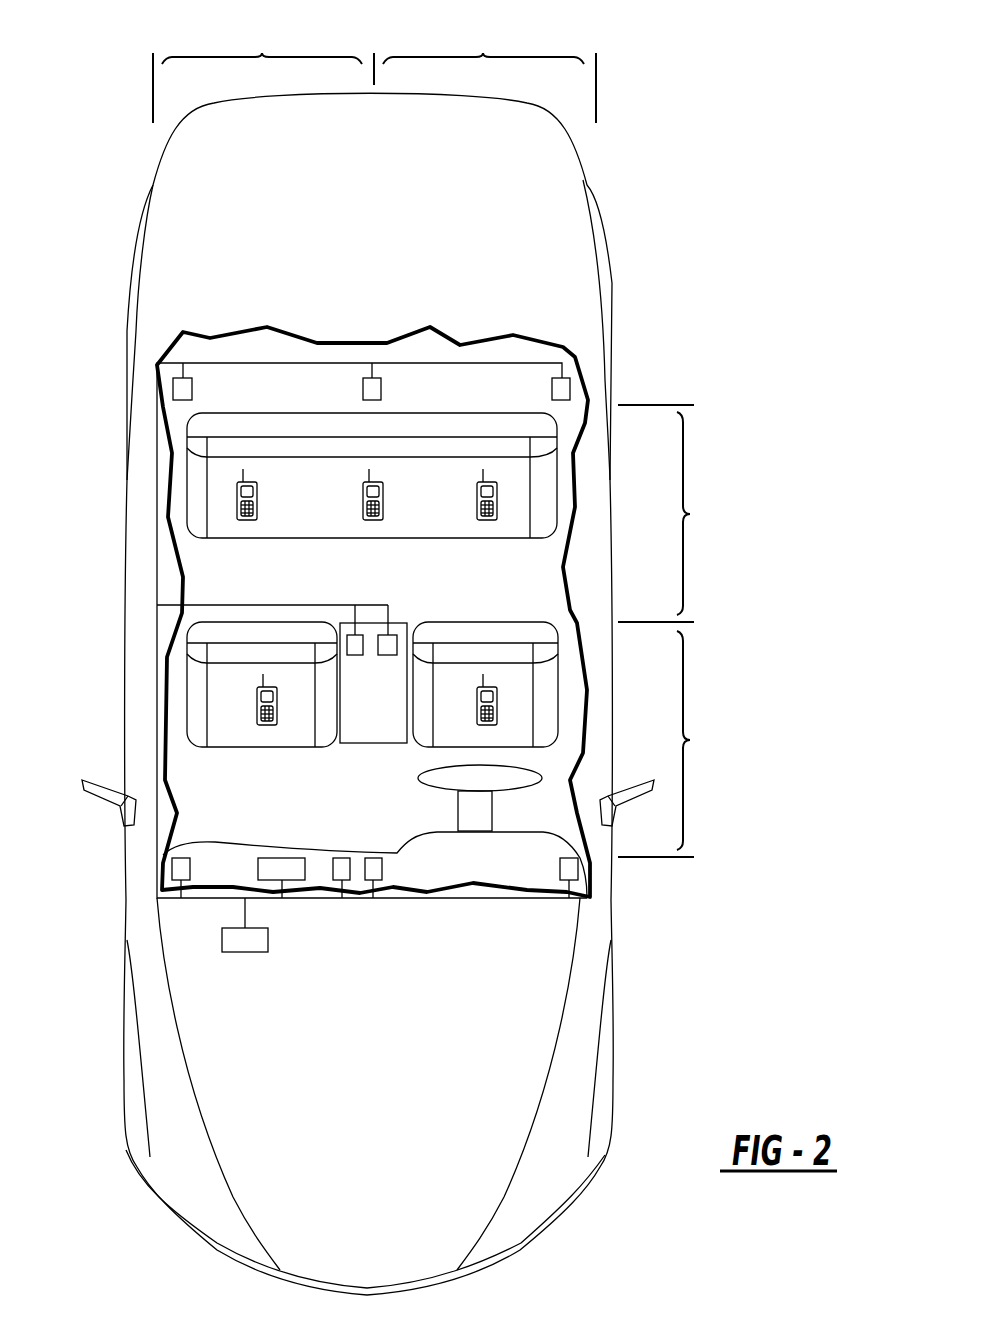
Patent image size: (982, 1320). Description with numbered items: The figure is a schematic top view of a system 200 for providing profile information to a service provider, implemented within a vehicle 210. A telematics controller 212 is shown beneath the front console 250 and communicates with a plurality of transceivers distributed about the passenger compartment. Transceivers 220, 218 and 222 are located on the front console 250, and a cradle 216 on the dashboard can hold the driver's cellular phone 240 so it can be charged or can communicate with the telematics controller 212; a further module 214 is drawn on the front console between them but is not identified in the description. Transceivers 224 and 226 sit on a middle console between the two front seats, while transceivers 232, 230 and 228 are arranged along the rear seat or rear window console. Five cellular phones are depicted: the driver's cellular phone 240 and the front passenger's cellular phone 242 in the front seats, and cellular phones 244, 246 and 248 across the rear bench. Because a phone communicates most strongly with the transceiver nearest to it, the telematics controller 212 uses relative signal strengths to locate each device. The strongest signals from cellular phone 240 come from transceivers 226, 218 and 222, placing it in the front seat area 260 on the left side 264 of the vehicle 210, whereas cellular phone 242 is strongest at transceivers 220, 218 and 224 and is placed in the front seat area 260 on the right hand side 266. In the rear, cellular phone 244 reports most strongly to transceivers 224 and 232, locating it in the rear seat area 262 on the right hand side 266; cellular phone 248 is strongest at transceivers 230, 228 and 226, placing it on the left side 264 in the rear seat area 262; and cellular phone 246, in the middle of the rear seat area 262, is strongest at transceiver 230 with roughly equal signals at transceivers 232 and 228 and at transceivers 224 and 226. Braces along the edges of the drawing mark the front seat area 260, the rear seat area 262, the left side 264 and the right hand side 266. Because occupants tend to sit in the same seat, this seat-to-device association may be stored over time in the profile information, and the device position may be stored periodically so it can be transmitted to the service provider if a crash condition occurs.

The system 200 is at (691, 170).
The vehicle 210 is at (609, 244).
The telematics controller 212 is at (268, 940).
The infotainment unit 214 is at (287, 858).
The cradle 216 is at (382, 868).
The transceiver 218 is at (342, 858).
The transceiver 220 is at (180, 858).
The transceiver 222 is at (578, 870).
The transceiver 224 is at (355, 655).
The transceiver 226 is at (390, 634).
The transceiver 228 is at (552, 389).
The transceiver 230 is at (381, 388).
The transceiver 232 is at (192, 389).
The cellular phone 240 is at (495, 700).
The cellular phone 242 is at (257, 710).
The cellular phone 244 is at (257, 500).
The cellular phone 246 is at (363, 502).
The cellular phone 248 is at (477, 503).
The front console 250 is at (204, 878).
The front seat area 260 is at (672, 744).
The rear seat area 262 is at (673, 513).
The left side 264 is at (489, 74).
The right hand side 266 is at (263, 74).